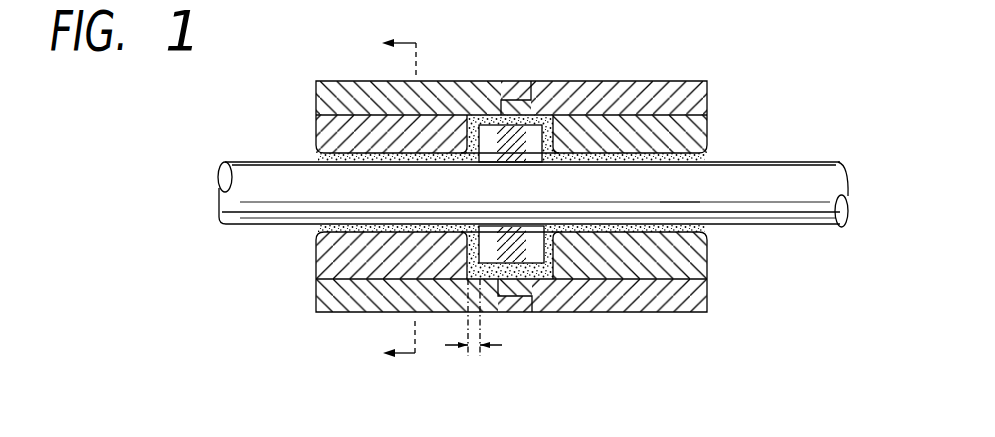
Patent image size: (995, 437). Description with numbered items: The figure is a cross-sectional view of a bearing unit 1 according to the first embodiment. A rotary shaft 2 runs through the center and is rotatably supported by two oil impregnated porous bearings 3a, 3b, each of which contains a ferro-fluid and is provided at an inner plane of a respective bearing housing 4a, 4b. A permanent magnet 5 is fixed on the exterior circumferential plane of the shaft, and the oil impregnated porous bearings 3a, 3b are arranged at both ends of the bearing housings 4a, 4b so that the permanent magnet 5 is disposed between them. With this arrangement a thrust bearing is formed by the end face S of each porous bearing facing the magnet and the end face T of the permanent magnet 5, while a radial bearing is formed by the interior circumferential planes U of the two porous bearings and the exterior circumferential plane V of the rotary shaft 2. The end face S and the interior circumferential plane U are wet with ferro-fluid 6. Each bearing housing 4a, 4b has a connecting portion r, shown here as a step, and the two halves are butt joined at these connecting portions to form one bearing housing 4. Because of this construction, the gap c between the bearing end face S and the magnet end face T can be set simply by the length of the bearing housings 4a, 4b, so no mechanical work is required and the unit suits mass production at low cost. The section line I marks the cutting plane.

The bearing unit 1 is at (367, 313).
The rotary shaft 2 is at (265, 167).
The oil impregnated porous bearing 3a is at (320, 255).
The oil impregnated porous bearing 3b is at (697, 260).
The bearing housing 4 is at (329, 316).
The bearing housing 4a is at (338, 80).
The bearing housing 4b is at (678, 305).
The permanent magnet 5 is at (537, 117).
The ferro-fluid 6 is at (420, 153).
The end face S is at (468, 252).
The end face T is at (491, 232).
The exterior circumferential plane V is at (620, 237).
The interior circumferential plane U is at (672, 205).
The gap c is at (473, 330).
The connecting portion r is at (498, 313).
The section line I- I is at (399, 198).